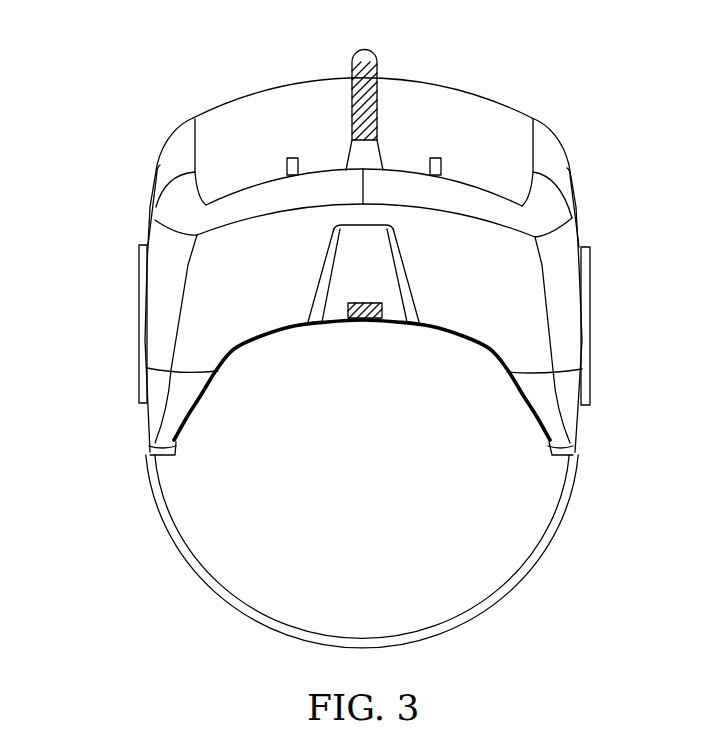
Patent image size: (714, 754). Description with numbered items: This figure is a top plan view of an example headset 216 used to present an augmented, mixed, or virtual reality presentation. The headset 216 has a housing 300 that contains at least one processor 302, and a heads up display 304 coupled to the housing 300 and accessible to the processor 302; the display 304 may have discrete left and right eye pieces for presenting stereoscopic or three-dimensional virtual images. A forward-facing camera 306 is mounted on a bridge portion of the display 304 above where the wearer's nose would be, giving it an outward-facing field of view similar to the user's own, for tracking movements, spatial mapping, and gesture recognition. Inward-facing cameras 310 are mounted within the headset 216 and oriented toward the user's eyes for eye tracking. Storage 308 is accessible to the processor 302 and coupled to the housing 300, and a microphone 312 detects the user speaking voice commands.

The headset 216 is at (130, 38).
The housing 300 is at (560, 516).
The processor 302 is at (257, 224).
The heads up display 304 is at (266, 89).
The forward-facing camera 306 is at (378, 55).
The storage 308 is at (457, 216).
The inward-facing cameras 310 is at (290, 157).
The microphone 312 is at (368, 320).